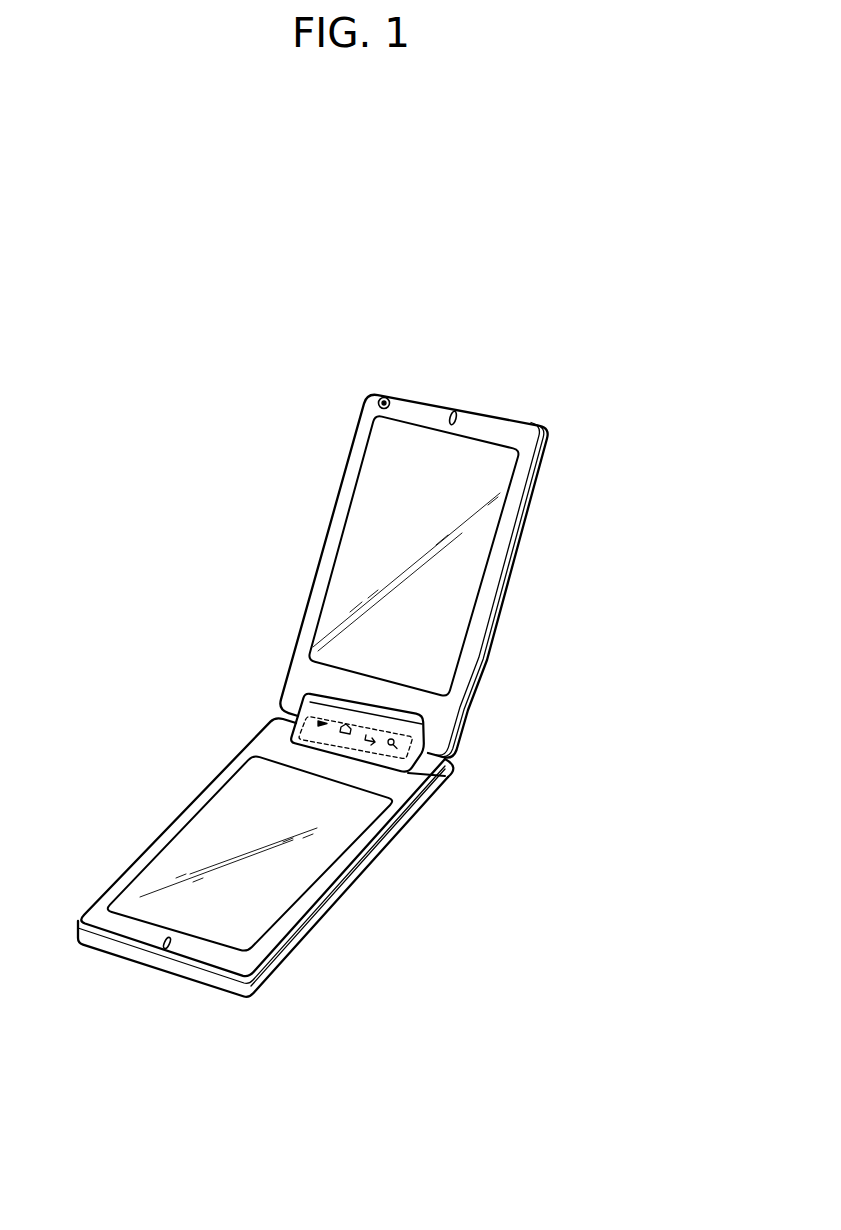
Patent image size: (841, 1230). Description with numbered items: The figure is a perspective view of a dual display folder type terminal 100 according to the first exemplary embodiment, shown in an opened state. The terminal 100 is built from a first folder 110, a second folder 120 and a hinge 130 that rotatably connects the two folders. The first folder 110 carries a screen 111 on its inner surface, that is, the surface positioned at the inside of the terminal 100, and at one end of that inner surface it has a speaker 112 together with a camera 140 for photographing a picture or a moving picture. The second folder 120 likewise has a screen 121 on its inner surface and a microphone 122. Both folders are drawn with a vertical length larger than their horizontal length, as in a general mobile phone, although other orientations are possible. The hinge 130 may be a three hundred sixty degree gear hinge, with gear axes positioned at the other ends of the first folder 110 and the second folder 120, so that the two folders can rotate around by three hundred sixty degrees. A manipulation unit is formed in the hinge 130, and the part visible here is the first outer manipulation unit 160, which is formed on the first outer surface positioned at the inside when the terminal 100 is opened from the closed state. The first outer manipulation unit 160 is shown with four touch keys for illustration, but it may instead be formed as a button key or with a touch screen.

The dual display folder type terminal 100 is at (616, 403).
The first folder 110 is at (540, 472).
The screen 111 is at (381, 493).
The speaker 112 is at (454, 411).
The second folder 120 is at (358, 876).
The screen 121 is at (250, 924).
The microphone 122 is at (167, 951).
The hinge 130 is at (443, 781).
The camera 140 is at (379, 394).
The first outer manipulation unit 160 is at (292, 742).